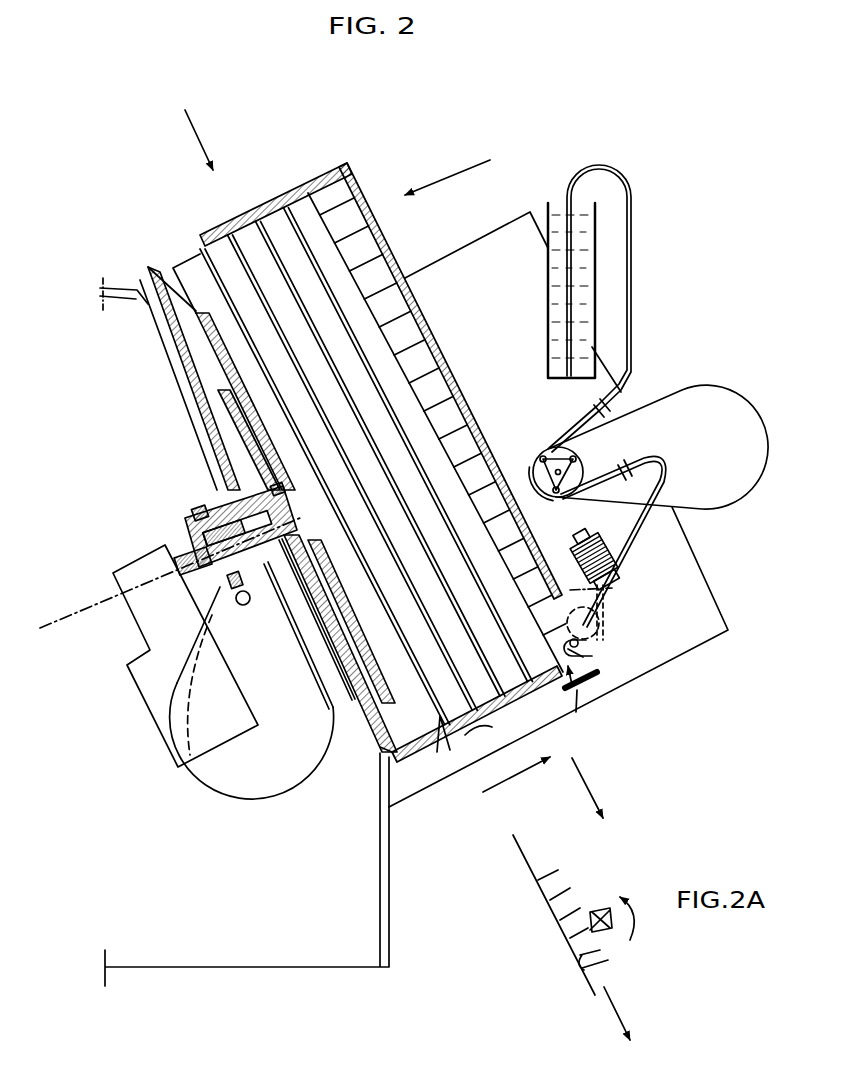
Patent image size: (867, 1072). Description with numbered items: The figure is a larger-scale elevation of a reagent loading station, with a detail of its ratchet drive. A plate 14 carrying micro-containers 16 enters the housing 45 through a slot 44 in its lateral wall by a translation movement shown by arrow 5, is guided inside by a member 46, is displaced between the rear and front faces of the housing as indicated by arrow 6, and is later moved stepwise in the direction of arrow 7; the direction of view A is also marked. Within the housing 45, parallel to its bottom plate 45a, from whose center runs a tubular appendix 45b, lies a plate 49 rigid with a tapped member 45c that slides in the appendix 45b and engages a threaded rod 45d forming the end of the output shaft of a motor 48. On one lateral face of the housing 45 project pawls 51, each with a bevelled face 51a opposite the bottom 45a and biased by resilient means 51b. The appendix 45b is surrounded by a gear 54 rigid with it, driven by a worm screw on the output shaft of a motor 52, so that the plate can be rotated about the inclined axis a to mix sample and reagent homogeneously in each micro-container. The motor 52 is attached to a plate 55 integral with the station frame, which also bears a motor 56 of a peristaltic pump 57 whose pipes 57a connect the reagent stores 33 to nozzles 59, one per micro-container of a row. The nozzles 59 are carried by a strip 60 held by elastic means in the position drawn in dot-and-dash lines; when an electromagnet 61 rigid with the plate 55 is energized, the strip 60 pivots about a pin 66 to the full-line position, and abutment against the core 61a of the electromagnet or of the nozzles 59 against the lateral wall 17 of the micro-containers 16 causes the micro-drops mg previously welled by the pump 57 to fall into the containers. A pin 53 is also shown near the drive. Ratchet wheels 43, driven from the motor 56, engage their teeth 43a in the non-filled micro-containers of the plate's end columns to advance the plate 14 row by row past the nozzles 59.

In FIG. 2, the arrow 5 is at (200, 139).
In FIG. 2, the viewing direction arrow A is at (447, 167).
In FIG. 2, the arrow 6 is at (516, 774).
In FIG. 2, the arrow 7 is at (588, 788).
In FIG. 2, the housing 45 is at (334, 158).
In FIG. 2, the plate 14 is at (333, 218).
In FIG. 2A, the plate 14 is at (580, 968).
In FIG. 2, the pawl 51 is at (447, 758).
In FIG. 2, the bevelled face 51a is at (395, 756).
In FIG. 2, the resilient means 51b is at (488, 738).
In FIG. 2, the slot 44 is at (182, 252).
In FIG. 2, the guide member 46 is at (170, 297).
In FIG. 2, the bottom plate 45a is at (222, 412).
In FIG. 2, the tubular appendix 45b is at (228, 503).
In FIG. 2, the tapped member 45c is at (190, 525).
In FIG. 2, the threaded rod 45d is at (200, 590).
In FIG. 2, the gear 54 is at (233, 600).
In FIG. 2, the pin 53 is at (250, 604).
In FIG. 2, the axis a is at (165, 577).
In FIG. 2, the motor 48 is at (162, 707).
In FIG. 2, the plate 49 is at (378, 665).
In FIG. 2, the motor 52 is at (222, 782).
In FIG. 2, the plate 55 is at (692, 578).
In FIG. 2, the stores 33 is at (592, 244).
In FIG. 2, the pipes 57a is at (636, 306).
In FIG. 2, the peristaltic pump 57 is at (590, 462).
In FIG. 2, the motor 56 is at (690, 402).
In FIG. 2, the electromagnet 61 is at (585, 550).
In FIG. 2, the core 61a is at (601, 542).
In FIG. 2, the strip 60 is at (605, 588).
In FIG. 2, the pin 66 is at (615, 592).
In FIG. 2, the nozzles 59 is at (603, 614).
In FIG. 2, the micro-drops mg is at (565, 645).
In FIG. 2, the ratchet wheels 43 is at (588, 652).
In FIG. 2A, the ratchet wheels 43 is at (600, 905).
In FIG. 2, the lateral wall 17 is at (598, 684).
In FIG. 2, the micro-containers 16 is at (583, 713).
In FIG. 2A, the teeth 43a is at (618, 945).